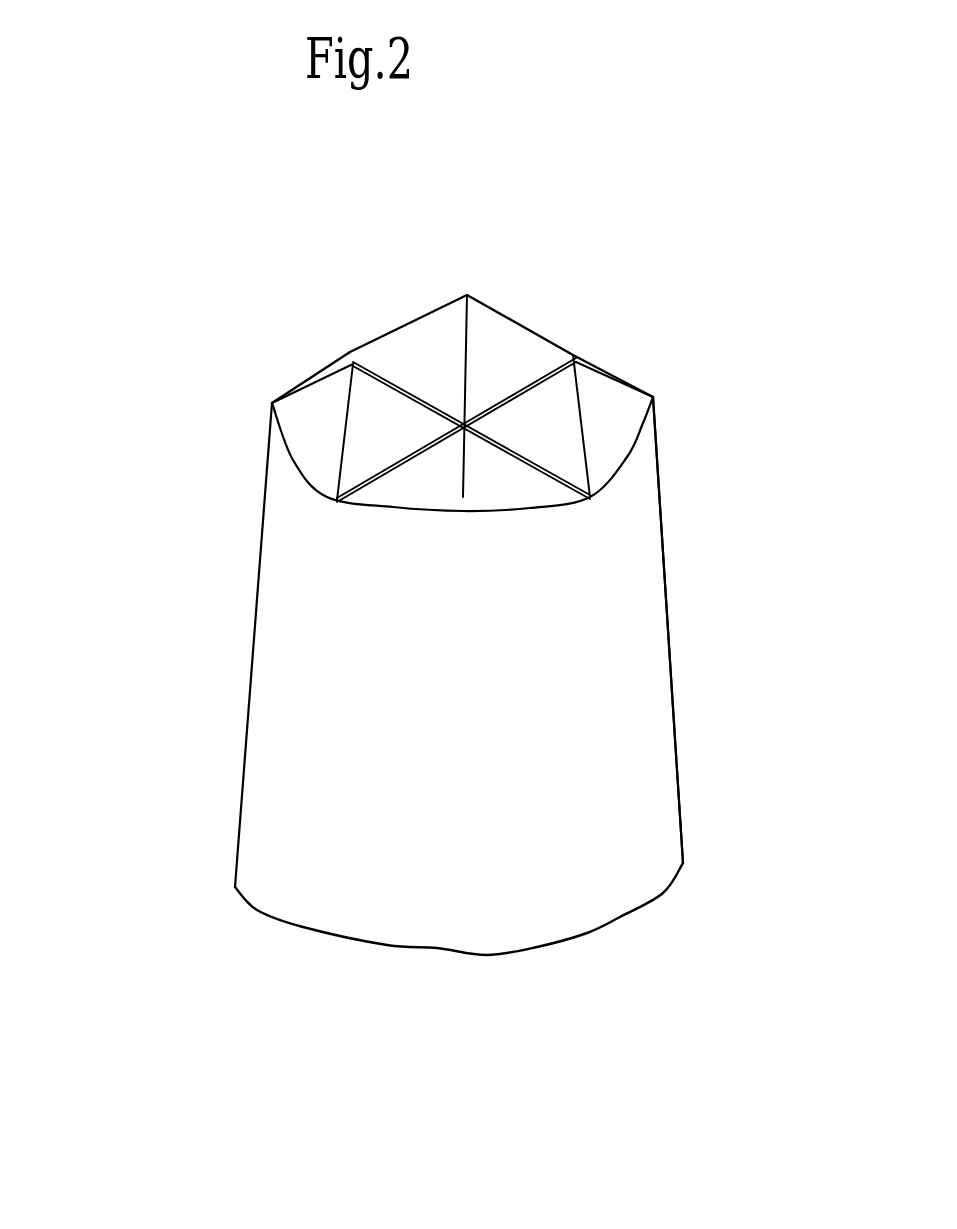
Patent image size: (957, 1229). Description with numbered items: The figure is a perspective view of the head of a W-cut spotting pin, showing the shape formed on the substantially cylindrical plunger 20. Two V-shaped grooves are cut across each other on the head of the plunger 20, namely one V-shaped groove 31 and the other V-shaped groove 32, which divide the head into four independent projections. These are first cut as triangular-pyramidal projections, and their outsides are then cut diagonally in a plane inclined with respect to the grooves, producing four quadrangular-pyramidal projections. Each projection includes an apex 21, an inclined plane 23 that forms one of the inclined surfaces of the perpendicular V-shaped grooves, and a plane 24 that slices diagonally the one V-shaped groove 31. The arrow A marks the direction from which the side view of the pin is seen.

The plunger 20 is at (282, 785).
The apex 21 is at (467, 295).
The plane 23 is at (548, 445).
The plane 24 is at (613, 432).
The V-shaped groove 31 is at (588, 500).
The V-shaped groove 32 is at (340, 500).
The arrow A is at (680, 549).